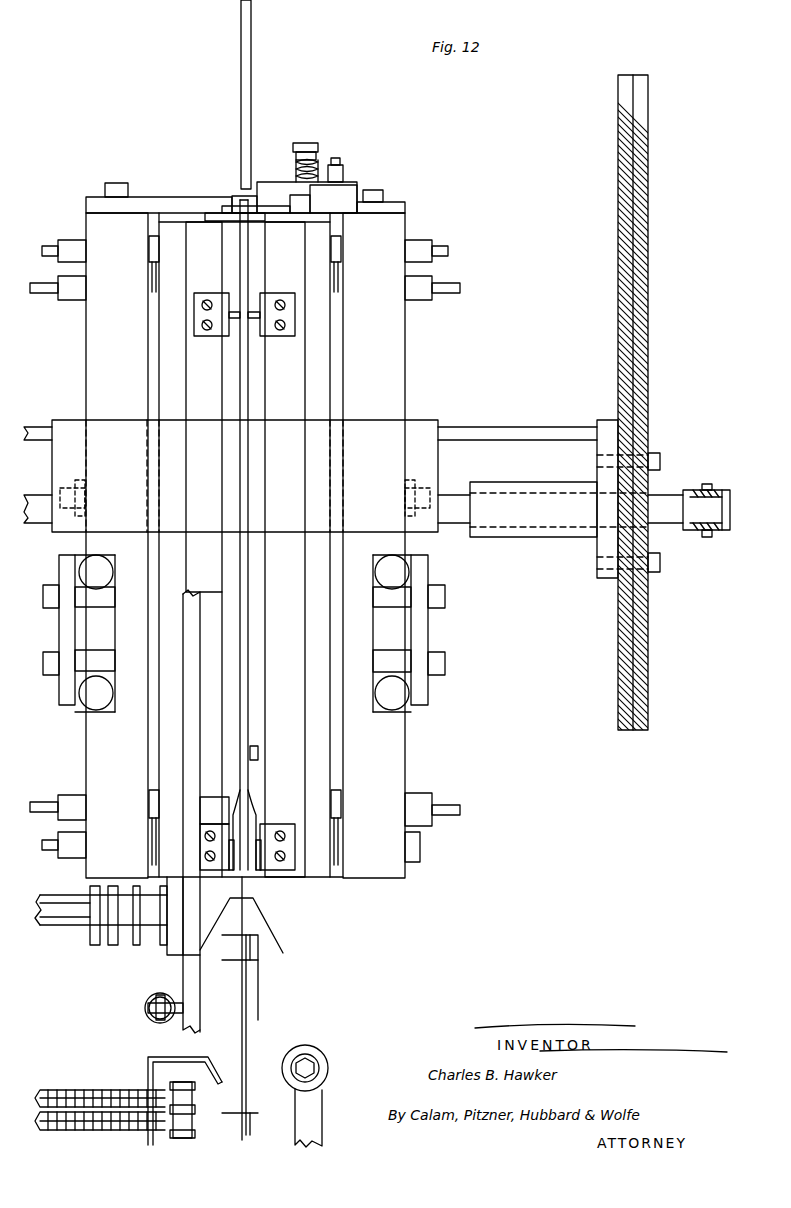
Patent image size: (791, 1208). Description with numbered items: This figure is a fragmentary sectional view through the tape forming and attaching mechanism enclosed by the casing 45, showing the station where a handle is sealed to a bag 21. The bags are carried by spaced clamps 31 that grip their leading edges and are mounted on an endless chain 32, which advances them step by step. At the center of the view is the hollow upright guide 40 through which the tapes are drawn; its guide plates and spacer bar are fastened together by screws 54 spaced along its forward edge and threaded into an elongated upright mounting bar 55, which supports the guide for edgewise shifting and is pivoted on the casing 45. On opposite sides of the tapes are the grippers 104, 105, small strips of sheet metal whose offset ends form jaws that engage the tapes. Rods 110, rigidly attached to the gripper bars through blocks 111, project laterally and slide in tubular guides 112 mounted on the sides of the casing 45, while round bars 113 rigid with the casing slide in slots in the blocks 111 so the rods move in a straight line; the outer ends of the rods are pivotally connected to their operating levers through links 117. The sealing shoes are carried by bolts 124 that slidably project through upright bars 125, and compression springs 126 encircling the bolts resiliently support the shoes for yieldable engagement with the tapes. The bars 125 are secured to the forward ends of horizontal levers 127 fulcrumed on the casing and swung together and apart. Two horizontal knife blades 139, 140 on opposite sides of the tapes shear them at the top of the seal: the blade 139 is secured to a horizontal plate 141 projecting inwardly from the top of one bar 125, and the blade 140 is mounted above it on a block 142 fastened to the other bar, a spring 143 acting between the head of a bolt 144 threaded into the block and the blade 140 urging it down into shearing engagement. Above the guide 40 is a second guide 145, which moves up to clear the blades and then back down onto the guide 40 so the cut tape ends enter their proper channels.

The bag 21 is at (239, 898).
The clamp 31 is at (254, 1016).
The endless chain 32 is at (186, 1122).
The guide 40 is at (238, 550).
The casing 45 is at (650, 645).
The screw 54 is at (259, 752).
The mounting bar 55 is at (210, 594).
The gripper 104 is at (244, 300).
The gripper 105 is at (268, 870).
The rod 110 is at (40, 496).
The block 111 is at (68, 420).
The tubular guide 112 is at (525, 538).
The round bar 113 is at (38, 432).
The link 117 is at (718, 498).
The bolt 124 is at (58, 258).
The upright bar 125 is at (90, 226).
The compression spring 126 is at (148, 260).
The horizontal lever 127 is at (90, 567).
The knife blade 139 is at (226, 216).
The knife blade 140 is at (277, 214).
The horizontal plate 141 is at (172, 202).
The block 142 is at (350, 192).
The spring 143 is at (318, 168).
The bolt 144 is at (306, 150).
The second guide 145 is at (226, 94).